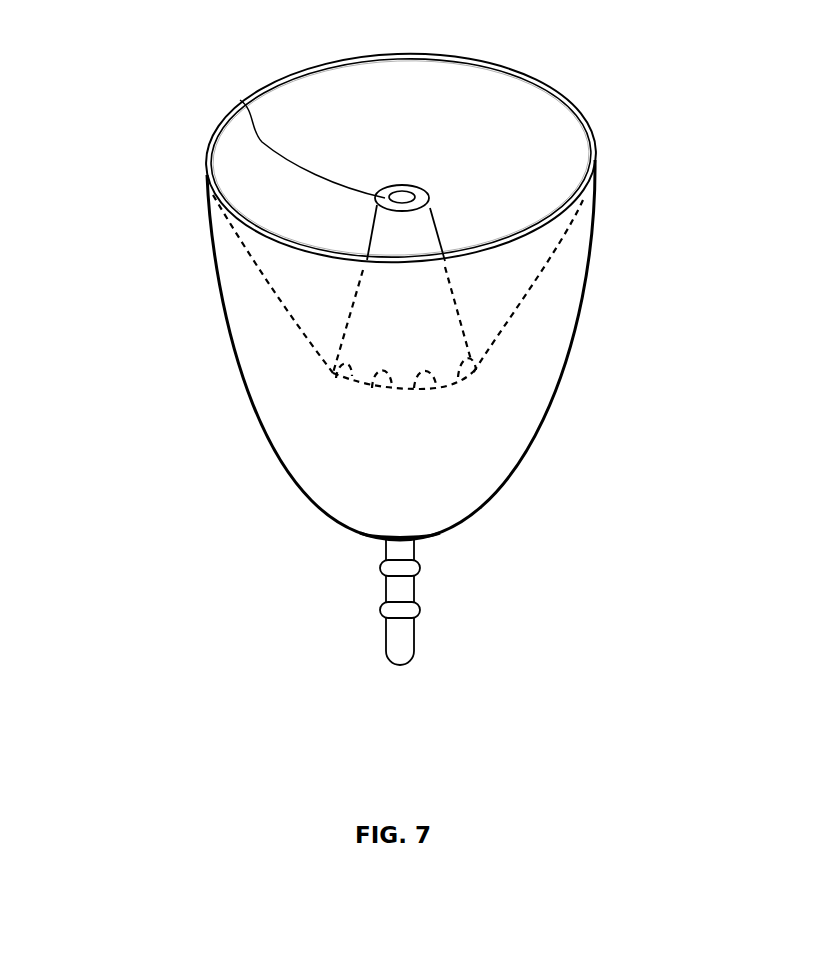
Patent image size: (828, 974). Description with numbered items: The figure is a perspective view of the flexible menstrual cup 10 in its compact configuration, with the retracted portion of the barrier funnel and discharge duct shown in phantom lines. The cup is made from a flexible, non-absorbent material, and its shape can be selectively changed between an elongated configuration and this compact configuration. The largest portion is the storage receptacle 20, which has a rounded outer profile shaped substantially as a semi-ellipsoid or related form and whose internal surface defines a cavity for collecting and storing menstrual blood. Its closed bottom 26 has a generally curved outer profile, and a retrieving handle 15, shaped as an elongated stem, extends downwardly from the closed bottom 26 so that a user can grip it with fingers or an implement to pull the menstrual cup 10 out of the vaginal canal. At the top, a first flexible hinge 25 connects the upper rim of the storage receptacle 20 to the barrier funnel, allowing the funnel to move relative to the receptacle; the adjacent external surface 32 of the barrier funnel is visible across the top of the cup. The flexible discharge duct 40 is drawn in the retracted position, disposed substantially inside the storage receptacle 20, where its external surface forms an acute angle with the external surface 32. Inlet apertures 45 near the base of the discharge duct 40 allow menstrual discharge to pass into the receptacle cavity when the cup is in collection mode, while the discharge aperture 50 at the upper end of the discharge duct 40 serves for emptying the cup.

The menstrual cup 10 is at (374, 335).
The retrieving handle 15 is at (432, 603).
The storage receptacle 20 is at (558, 398).
The first flexible hinge 25 is at (523, 68).
The closed bottom 26 is at (363, 537).
The external surface of the barrier funnel 32 is at (495, 117).
The discharge duct 40 is at (441, 238).
The inlet apertures 45 is at (353, 383).
The discharge aperture 50 is at (240, 100).